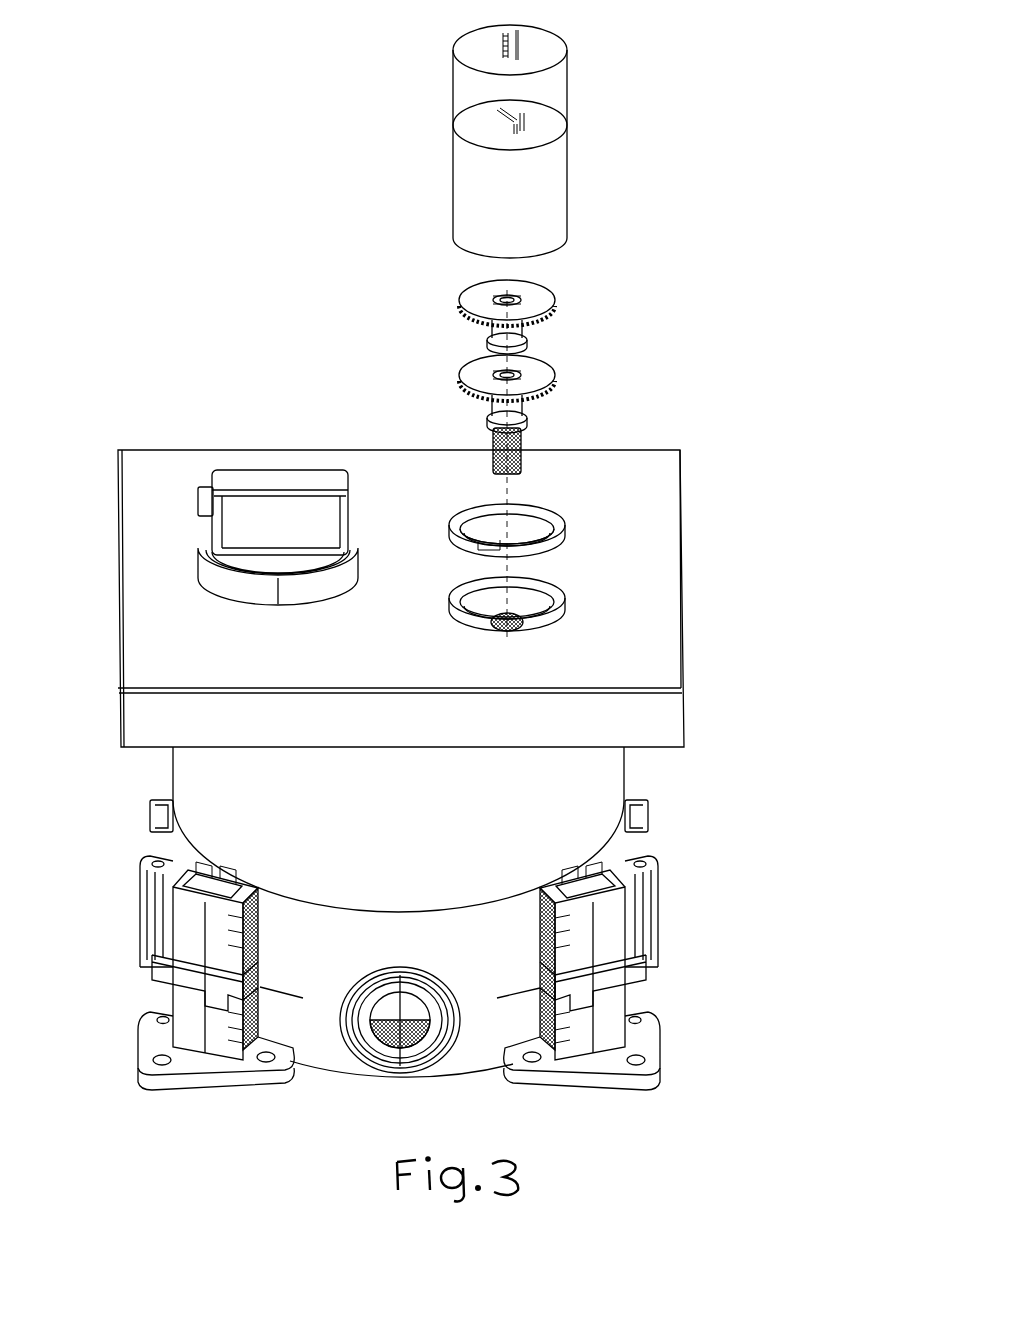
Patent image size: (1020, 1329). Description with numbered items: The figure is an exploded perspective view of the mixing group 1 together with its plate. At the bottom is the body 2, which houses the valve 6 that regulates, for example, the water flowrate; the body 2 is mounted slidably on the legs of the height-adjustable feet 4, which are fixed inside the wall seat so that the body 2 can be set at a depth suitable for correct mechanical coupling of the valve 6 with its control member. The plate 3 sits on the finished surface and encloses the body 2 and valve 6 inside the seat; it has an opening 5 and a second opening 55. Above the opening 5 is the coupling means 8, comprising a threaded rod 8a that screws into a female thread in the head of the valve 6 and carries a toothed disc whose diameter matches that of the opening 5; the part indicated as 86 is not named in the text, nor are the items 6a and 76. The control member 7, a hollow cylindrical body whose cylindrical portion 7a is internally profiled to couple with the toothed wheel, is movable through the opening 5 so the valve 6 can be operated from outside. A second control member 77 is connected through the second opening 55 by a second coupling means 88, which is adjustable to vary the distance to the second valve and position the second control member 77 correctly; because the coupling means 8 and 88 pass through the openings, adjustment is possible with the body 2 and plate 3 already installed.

The mixing group 1 is at (175, 172).
The body 2 is at (604, 783).
The plate 3 is at (652, 558).
The feet 4 is at (620, 1098).
The opening 5 is at (548, 582).
The second opening 55 is at (548, 508).
The valve 6 is at (456, 612).
The bore 6a is at (520, 624).
The control member 7 is at (582, 170).
The cylindrical portion 7a is at (465, 207).
The handle disc 76 is at (472, 120).
The second control member 77 is at (582, 68).
The coupling means 8 is at (566, 370).
The threaded rod 8a is at (522, 446).
The gear disc 86 is at (470, 368).
The second coupling means 88 is at (566, 292).